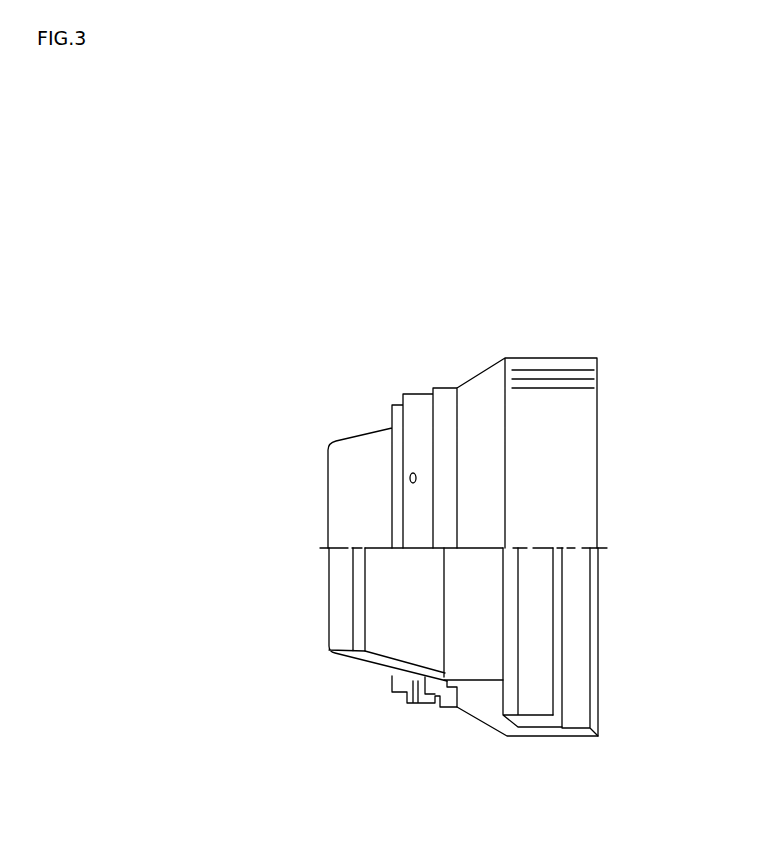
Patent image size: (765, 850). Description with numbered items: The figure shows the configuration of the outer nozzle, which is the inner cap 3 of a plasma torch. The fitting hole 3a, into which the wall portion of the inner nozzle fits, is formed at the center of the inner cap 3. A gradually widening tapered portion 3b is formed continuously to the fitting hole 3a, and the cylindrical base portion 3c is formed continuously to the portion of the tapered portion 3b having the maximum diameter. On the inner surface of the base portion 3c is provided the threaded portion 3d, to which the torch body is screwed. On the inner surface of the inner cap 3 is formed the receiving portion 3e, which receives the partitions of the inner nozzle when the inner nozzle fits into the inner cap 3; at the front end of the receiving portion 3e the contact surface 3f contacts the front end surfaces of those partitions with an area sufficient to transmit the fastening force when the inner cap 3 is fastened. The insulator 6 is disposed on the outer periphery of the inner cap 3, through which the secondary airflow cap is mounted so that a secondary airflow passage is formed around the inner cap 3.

The inner cap 3 is at (412, 348).
The fitting hole 3a is at (342, 647).
The tapered portion 3b is at (378, 663).
The base portion 3c is at (537, 731).
The threaded portion 3d is at (545, 720).
The receiving portion 3e is at (487, 680).
The contact surface 3f is at (445, 677).
The insulator 6 is at (448, 700).